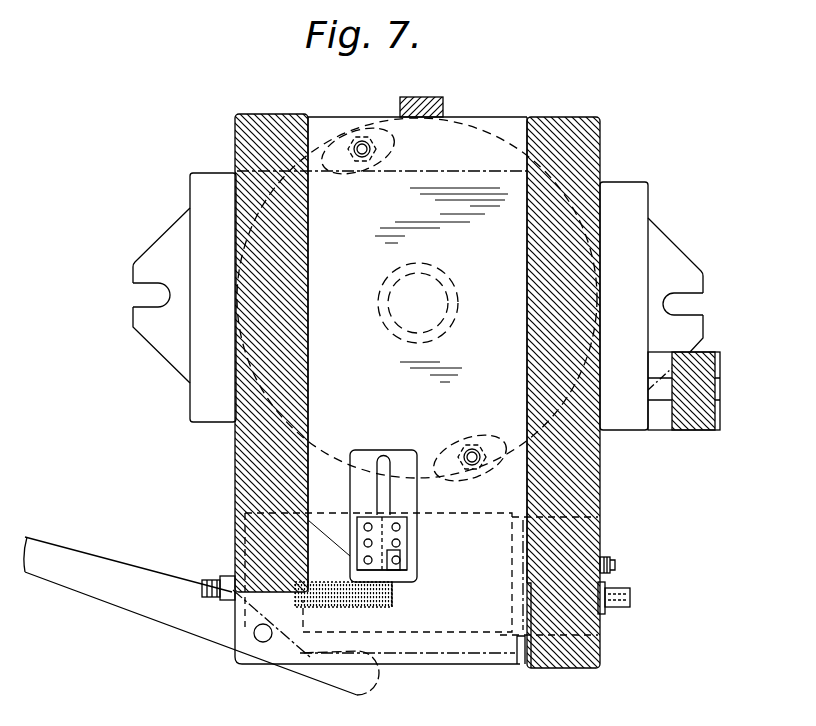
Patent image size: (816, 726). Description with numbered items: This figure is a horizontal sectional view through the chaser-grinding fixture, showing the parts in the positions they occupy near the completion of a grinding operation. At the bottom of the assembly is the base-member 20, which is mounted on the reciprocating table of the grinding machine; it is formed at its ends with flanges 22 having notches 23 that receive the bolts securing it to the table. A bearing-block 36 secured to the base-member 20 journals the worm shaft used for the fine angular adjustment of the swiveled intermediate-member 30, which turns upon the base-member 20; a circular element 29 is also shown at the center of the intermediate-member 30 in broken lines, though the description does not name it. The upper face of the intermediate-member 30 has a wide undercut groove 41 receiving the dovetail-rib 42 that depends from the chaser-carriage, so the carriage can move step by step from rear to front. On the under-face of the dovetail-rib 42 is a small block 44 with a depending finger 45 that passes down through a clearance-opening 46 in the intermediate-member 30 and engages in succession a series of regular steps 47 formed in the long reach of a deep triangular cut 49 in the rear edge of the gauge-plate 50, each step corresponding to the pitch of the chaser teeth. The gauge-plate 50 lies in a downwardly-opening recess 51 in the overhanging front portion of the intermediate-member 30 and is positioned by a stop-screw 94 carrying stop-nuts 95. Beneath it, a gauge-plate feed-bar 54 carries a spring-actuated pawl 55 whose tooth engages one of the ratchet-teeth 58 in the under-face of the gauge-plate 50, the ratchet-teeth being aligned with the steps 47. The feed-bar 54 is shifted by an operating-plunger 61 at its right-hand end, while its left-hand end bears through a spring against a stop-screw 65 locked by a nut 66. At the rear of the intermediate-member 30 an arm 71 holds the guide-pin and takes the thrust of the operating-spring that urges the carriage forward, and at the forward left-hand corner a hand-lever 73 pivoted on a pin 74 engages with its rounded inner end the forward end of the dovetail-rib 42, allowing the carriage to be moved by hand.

The base-member 20 is at (215, 410).
The flanges 22 is at (170, 356).
The notches 23 is at (150, 297).
The shaft opening 29 is at (447, 310).
The intermediate-member 30 is at (572, 143).
The bearing-block 36 is at (697, 415).
The undercut groove 41 is at (533, 254).
The dovetail-rib 42 is at (468, 172).
The block 44 is at (406, 532).
The finger 45 is at (404, 558).
The clearance-opening 46 is at (417, 460).
The steps 47 is at (350, 540).
The triangular cut 49 is at (410, 578).
The gauge-plate 50 is at (245, 540).
The recess 51 is at (520, 650).
The gauge-plate feed-bar 54 is at (604, 615).
The pawl 55 is at (381, 607).
The ratchet-teeth 58 is at (325, 607).
The operating-plunger 61 is at (630, 597).
The stop-screw 65 is at (206, 579).
The nut 66 is at (228, 601).
The arm 71 is at (443, 101).
The hand-lever 73 is at (105, 612).
The pin 74 is at (261, 643).
The stop-screw 94 is at (616, 566).
The stop-nuts 95 is at (614, 550).